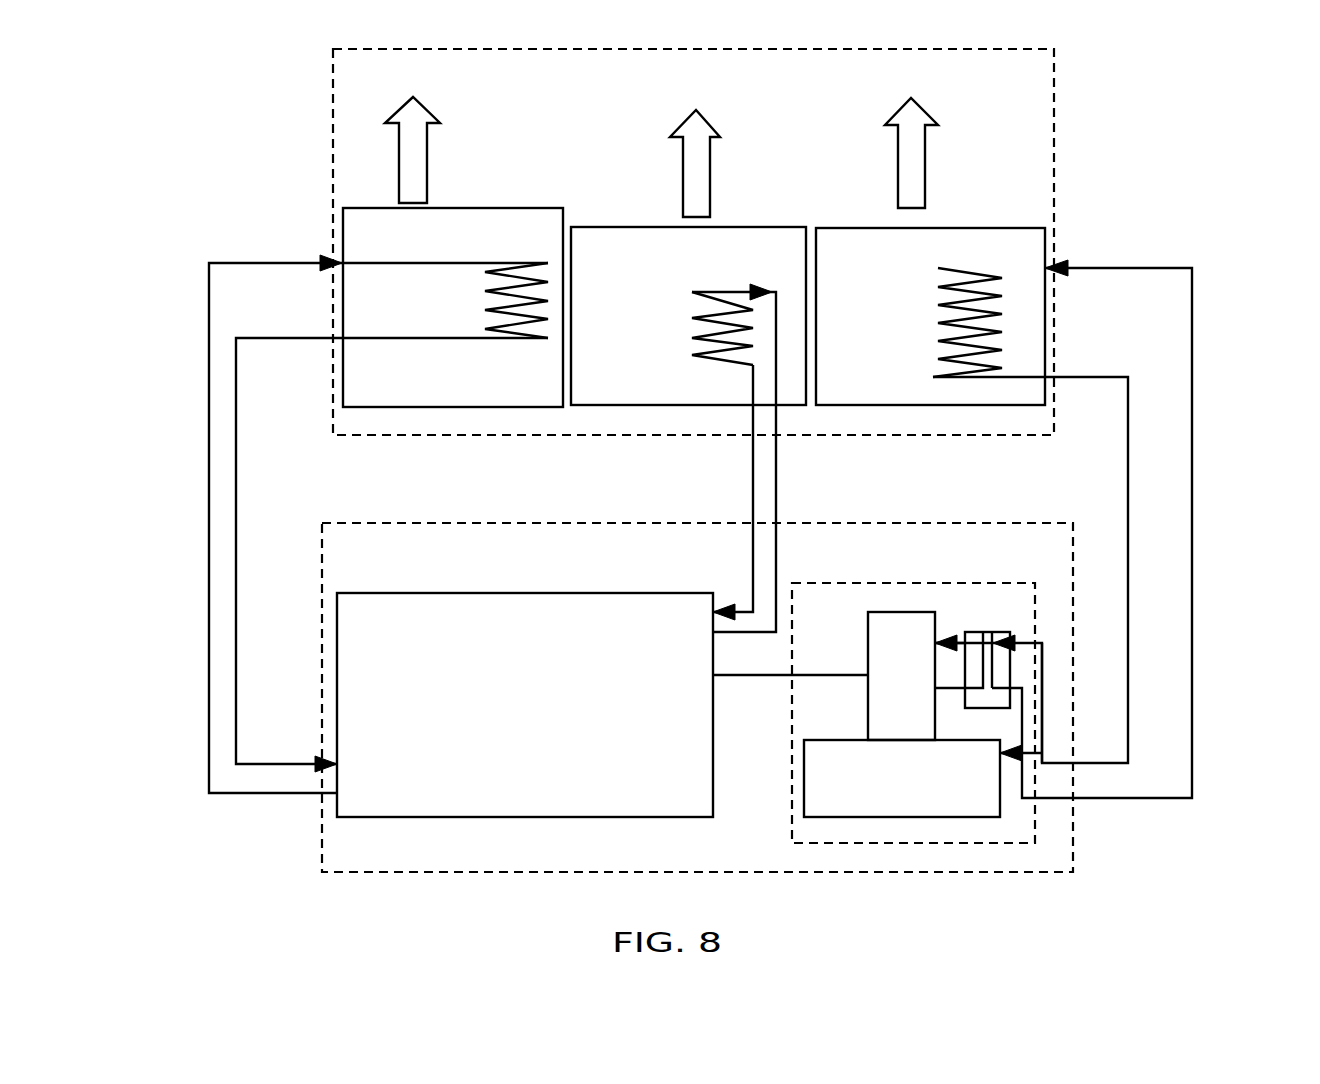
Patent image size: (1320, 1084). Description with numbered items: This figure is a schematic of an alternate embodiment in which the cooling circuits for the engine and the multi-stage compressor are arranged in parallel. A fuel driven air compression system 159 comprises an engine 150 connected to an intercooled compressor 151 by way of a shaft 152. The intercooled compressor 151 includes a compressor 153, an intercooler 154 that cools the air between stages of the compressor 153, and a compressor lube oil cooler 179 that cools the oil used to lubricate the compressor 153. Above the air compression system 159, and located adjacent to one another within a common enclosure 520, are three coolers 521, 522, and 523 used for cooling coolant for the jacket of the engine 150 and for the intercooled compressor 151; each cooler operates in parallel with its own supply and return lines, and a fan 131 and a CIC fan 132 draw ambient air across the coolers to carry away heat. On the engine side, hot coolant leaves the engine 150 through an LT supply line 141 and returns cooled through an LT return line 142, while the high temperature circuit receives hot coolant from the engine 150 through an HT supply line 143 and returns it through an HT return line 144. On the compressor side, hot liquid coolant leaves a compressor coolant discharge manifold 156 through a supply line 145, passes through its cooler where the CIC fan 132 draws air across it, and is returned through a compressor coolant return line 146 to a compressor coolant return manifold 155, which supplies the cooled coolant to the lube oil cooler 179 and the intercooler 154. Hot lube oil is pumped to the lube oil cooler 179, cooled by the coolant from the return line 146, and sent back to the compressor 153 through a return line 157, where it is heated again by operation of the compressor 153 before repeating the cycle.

The heat exchange unit 520 is at (1060, 168).
The fan 131 is at (427, 167).
The CIC fan 132 is at (897, 172).
The cooler 521 is at (692, 338).
The cooler 522 is at (487, 312).
The cooler 523 is at (938, 323).
The LT supply line 141 is at (777, 492).
The LT return line 142 is at (752, 492).
The HT supply line 143 is at (209, 488).
The HT return line 144 is at (236, 422).
The supply line 145 is at (1193, 520).
The compressor coolant return line 146 is at (1127, 497).
The fuel driven air compression system 159 is at (549, 522).
The engine 150 is at (490, 592).
The intercooled compressor 151 is at (872, 583).
The shaft 152 is at (762, 677).
The compressor 153 is at (868, 700).
The intercooler 154 is at (912, 820).
The compressor coolant return manifold 155 is at (1043, 675).
The compressor coolant discharge manifold 156 is at (1023, 740).
The return line 157 is at (957, 634).
The compressor lube oil cooler 179 is at (980, 626).